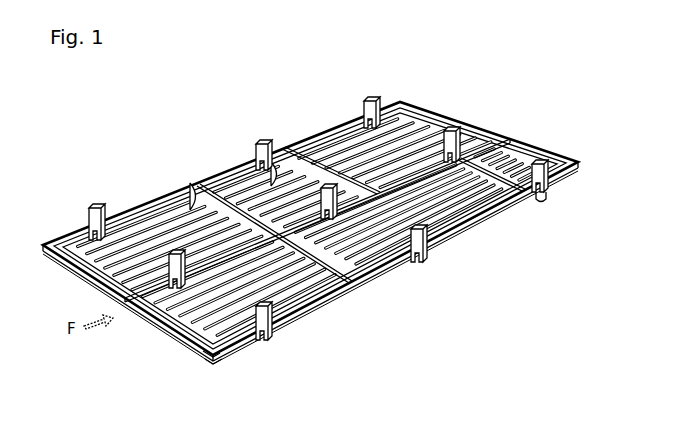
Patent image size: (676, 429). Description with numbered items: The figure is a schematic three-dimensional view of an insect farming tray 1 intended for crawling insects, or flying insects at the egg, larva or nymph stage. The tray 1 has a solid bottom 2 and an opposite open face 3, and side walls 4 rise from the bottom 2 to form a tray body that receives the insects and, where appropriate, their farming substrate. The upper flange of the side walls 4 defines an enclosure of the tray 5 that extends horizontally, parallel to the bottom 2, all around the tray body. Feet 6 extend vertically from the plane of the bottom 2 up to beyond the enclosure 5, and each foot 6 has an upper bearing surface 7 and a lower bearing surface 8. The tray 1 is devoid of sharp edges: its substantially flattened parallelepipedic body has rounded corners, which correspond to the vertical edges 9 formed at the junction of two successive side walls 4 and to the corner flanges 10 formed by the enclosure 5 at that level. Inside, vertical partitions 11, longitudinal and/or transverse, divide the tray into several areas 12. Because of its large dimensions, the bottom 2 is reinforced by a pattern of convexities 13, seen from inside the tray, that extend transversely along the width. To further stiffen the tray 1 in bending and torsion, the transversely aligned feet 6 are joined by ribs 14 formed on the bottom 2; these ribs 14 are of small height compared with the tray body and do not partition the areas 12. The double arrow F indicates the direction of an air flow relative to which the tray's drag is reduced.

The tray 1 is at (160, 150).
The bottom 2 is at (340, 303).
The open face 3 is at (423, 108).
The side walls 4 is at (453, 238).
The enclosure of the tray 5 is at (217, 165).
The feet 6 is at (95, 207).
The upper bearing surface 7 is at (543, 162).
The lower bearing surface 8 is at (541, 201).
The vertical edges 9 is at (215, 366).
The corner flanges 10 is at (207, 359).
The vertical partitions 11 is at (312, 140).
The areas 12 is at (160, 217).
The convexities 13 is at (190, 200).
The ribs 14 is at (268, 160).